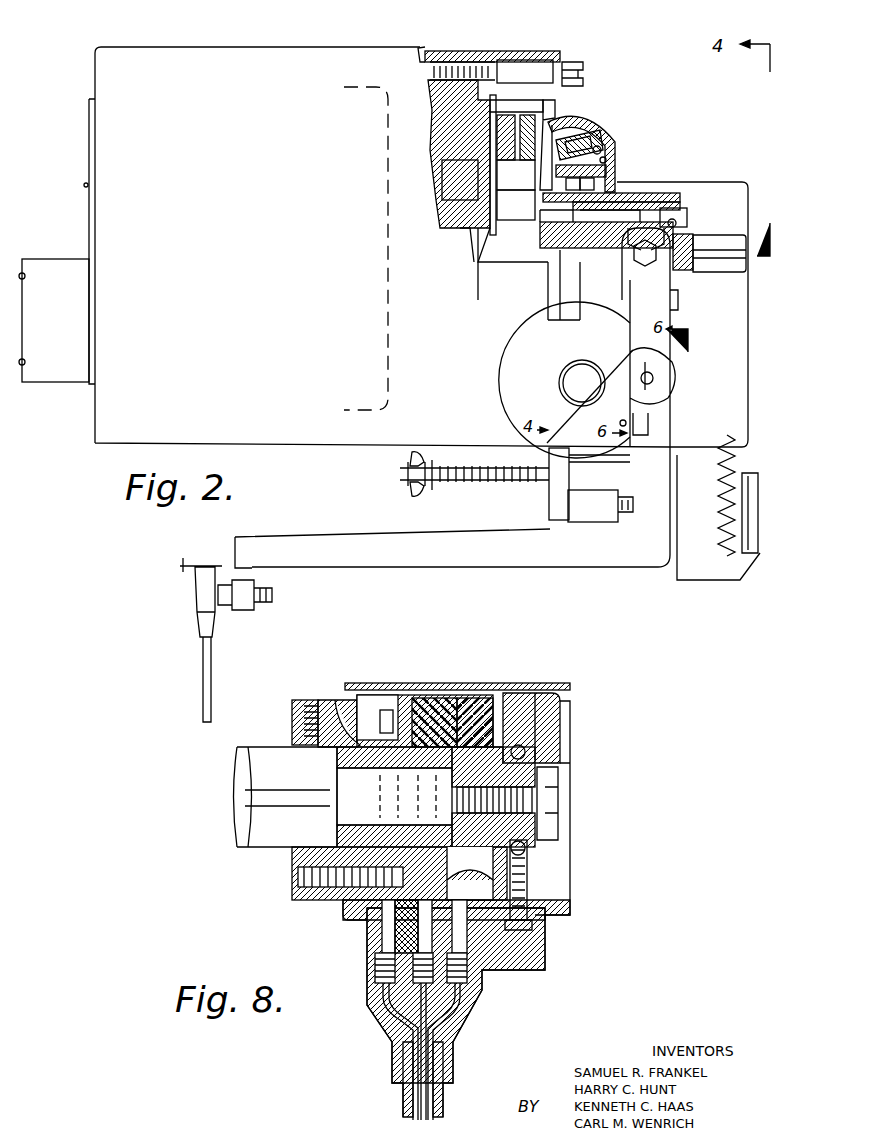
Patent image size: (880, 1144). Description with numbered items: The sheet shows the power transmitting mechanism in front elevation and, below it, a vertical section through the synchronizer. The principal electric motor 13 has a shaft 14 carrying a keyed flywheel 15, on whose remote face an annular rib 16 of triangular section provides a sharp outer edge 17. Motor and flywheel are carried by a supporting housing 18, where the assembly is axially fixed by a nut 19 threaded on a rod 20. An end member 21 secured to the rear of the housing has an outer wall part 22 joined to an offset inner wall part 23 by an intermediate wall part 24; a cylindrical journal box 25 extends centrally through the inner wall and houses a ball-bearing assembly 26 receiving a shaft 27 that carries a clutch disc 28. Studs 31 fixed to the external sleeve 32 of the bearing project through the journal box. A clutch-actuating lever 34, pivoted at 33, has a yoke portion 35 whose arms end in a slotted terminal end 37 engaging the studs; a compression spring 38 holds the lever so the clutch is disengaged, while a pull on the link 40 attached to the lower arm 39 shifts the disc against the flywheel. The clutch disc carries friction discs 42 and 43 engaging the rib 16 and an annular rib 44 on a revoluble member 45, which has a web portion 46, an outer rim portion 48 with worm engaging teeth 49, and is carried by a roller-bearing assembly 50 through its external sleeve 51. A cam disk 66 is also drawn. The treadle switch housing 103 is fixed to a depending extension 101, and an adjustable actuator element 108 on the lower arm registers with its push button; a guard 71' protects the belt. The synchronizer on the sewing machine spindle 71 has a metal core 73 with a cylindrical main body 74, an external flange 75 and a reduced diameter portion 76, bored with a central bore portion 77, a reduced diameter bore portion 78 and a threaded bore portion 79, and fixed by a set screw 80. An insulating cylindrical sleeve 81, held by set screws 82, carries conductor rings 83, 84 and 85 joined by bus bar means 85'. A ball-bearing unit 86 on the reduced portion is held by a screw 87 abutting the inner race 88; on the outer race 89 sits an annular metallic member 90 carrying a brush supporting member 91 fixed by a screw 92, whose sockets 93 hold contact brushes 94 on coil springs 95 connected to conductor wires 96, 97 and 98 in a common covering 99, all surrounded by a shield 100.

In FIG. 2, the principal electric motor 13 is at (392, 318).
In FIG. 2, the motor shaft 14 is at (480, 268).
In FIG. 2, the flywheel 15 is at (430, 102).
In FIG. 2, the annular rib 16 is at (484, 182).
In FIG. 2, the outer edge 17 is at (492, 96).
In FIG. 2, the supporting housing 18 is at (470, 50).
In FIG. 2, the nut 19 is at (584, 72).
In FIG. 2, the rod 20 is at (502, 62).
In FIG. 2, the end member 21 is at (602, 154).
In FIG. 2, the outer wall part 22 is at (568, 98).
In FIG. 2, the inner wall part 23 is at (612, 170).
In FIG. 2, the intermediate wall part 24 is at (580, 135).
In FIG. 2, the journal box 25 is at (662, 193).
In FIG. 2, the ball-bearing assembly 26 is at (688, 226).
In FIG. 2, the shaft 27 is at (742, 265).
In FIG. 2, the clutch disc 28 is at (500, 200).
In FIG. 2, the stud 31 is at (646, 268).
In FIG. 2, the external sleeve 32 is at (682, 210).
In FIG. 2, the pivot 33 is at (654, 378).
In FIG. 2, the clutch-actuating lever 34 is at (645, 566).
In FIG. 2, the yoke portion 35 is at (668, 300).
In FIG. 2, the slotted terminal end 37 is at (694, 250).
In FIG. 2, the compression spring 38 is at (472, 480).
In FIG. 2, the lower arm 39 is at (460, 562).
In FIG. 2, the link 40 is at (212, 666).
In FIG. 2, the annular friction disc 42 is at (505, 115).
In FIG. 2, the annular friction disc 43 is at (528, 115).
In FIG. 2, the annular rib 44 is at (516, 175).
In FIG. 2, the revoluble member 45 is at (575, 145).
In FIG. 2, the web portion 46 is at (560, 170).
In FIG. 2, the outer rim portion 48 is at (606, 160).
In FIG. 2, the worm engaging teeth 49 is at (600, 148).
In FIG. 2, the roller-bearing assembly 50 is at (598, 183).
In FIG. 2, the external sleeve 51 is at (585, 180).
In FIG. 2, the cam disk 66 is at (504, 360).
In FIG. 2, the depending extension 101 is at (552, 496).
In FIG. 2, the housing 103 is at (590, 515).
In FIG. 2, the adjustable actuator element 108 is at (710, 495).
In FIG. 2, the guard 71' is at (760, 529).
In FIG. 8, the sewing machine spindle 71 is at (281, 797).
In FIG. 8, the metal core 73 is at (335, 705).
In FIG. 8, the cylindrical main body 74 is at (470, 873).
In FIG. 8, the external flange 75 is at (340, 900).
In FIG. 8, the reduced diameter portion 76 is at (538, 830).
In FIG. 8, the central bore portion 77 is at (347, 723).
In FIG. 8, the reduced diameter bore portion 78 is at (377, 717).
In FIG. 8, the internally threaded bore portion 79 is at (528, 797).
In FIG. 8, the set screw 80 is at (307, 700).
In FIG. 8, the cylindrical sleeve 81 is at (487, 703).
In FIG. 8, the set screw 82 is at (300, 877).
In FIG. 8, the electrical conductor ring 83 is at (423, 702).
In FIG. 8, the electrical conductor ring 84 is at (460, 698).
In FIG. 8, the electrical conductor ring 85 is at (346, 921).
In FIG. 8, the bus bar means 85' is at (392, 692).
In FIG. 8, the ball-bearing unit 86 is at (537, 855).
In FIG. 8, the screw 87 is at (560, 812).
In FIG. 8, the inner race 88 is at (565, 752).
In FIG. 8, the outer race 89 is at (525, 750).
In FIG. 8, the annular metallic member 90 is at (552, 708).
In FIG. 8, the brush supporting member 91 is at (372, 1010).
In FIG. 8, the screw 92 is at (530, 975).
In FIG. 8, the brush-receiving socket 93 is at (388, 932).
In FIG. 8, the contact brush 94 is at (418, 927).
In FIG. 8, the coil spring 95 is at (385, 970).
In FIG. 8, the conductor wire 96 is at (420, 1053).
In FIG. 8, the conductor wire 97 is at (438, 1063).
In FIG. 8, the conductor wire 98 is at (395, 1030).
In FIG. 8, the common covering 99 is at (403, 1100).
In FIG. 8, the shield 100 is at (535, 685).